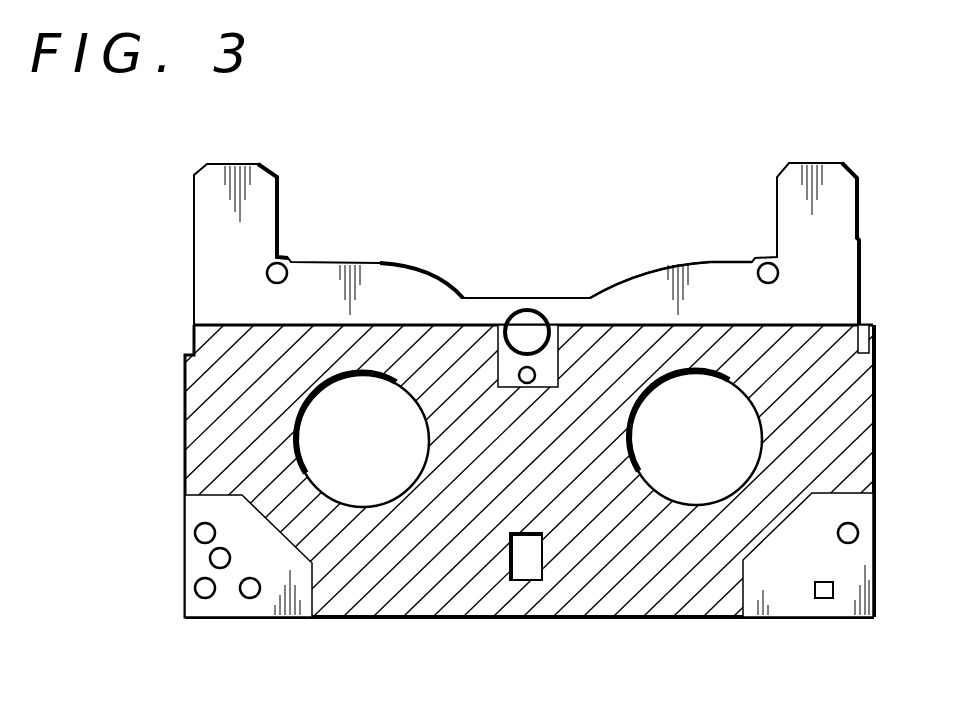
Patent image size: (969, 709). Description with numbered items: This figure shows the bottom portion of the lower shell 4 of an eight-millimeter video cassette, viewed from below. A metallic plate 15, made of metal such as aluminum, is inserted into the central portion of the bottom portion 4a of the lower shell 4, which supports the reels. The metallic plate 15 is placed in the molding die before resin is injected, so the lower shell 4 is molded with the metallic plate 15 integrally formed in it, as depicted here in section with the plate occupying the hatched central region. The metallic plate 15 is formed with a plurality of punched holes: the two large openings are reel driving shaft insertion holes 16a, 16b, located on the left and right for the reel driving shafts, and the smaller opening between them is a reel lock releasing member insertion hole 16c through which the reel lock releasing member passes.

The metallic plate 15 is at (477, 423).
The lower shell 4 is at (533, 300).
The bottom portion 4a is at (643, 303).
The reel driving shaft insertion hole 16a is at (323, 482).
The reel driving shaft insertion hole 16b is at (725, 473).
The reel lock releasing member insertion hole 16c is at (517, 557).